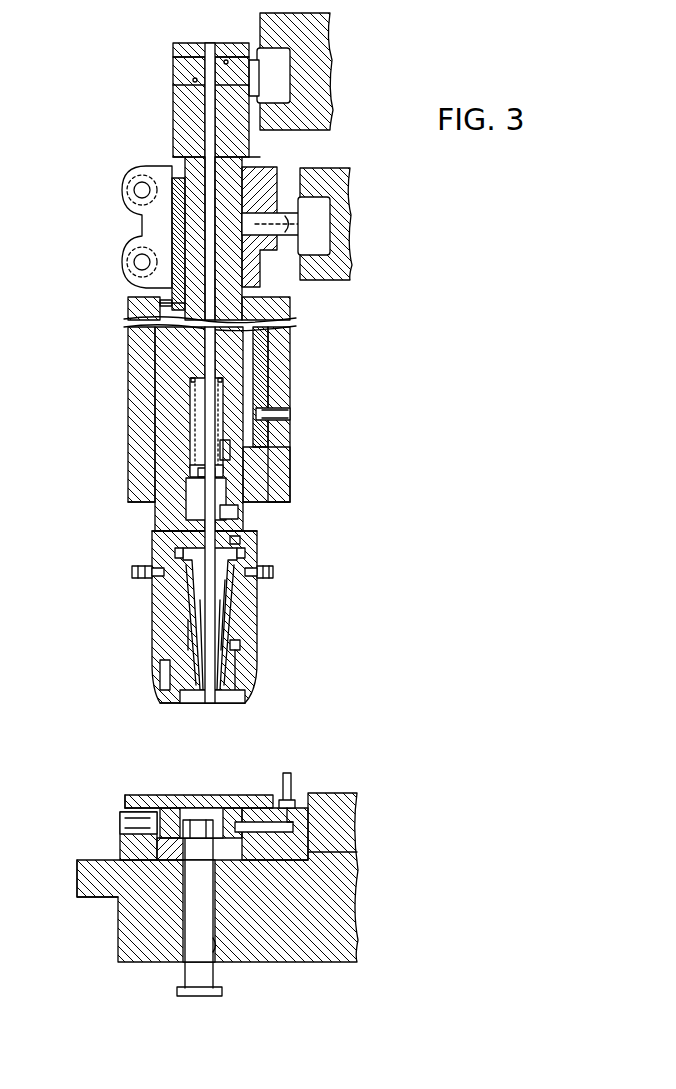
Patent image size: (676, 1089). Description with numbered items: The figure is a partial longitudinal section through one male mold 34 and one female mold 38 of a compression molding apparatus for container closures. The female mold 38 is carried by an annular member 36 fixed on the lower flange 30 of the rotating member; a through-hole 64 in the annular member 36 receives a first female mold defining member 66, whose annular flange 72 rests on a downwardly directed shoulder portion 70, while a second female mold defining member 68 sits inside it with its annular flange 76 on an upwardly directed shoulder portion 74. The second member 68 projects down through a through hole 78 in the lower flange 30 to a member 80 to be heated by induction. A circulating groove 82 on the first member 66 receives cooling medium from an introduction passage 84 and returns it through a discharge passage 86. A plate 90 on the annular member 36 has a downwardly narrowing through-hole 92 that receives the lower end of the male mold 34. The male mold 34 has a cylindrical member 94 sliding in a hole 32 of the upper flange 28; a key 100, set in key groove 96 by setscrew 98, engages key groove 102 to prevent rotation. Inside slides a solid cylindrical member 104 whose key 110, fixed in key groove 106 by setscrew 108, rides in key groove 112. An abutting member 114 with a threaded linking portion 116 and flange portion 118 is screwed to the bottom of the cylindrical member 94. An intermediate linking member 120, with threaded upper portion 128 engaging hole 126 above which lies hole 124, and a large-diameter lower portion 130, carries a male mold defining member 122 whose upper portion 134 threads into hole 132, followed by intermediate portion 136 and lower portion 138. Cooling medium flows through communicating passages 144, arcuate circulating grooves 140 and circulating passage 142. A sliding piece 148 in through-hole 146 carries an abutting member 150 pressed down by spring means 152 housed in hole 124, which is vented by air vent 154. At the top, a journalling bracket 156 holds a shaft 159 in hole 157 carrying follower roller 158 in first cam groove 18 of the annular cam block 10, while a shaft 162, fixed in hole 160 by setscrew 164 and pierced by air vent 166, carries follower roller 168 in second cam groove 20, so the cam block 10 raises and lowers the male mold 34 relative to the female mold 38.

The annular cam block 10 is at (325, 165).
The first cam groove 18 is at (335, 198).
The second cam groove 20 is at (285, 50).
The upper flange 28 is at (135, 420).
The lower flange 30 is at (122, 952).
The hole 32 is at (158, 355).
The male mold 34 is at (125, 535).
The annular member 36 is at (118, 848).
The female mold 38 is at (157, 780).
The through-hole 64 is at (165, 868).
The first female mold defining member 66 is at (240, 806).
The second female mold defining member 68 is at (207, 832).
The shoulder portion 70 is at (240, 855).
The annular flange 72 is at (160, 867).
The shoulder portion 74 is at (199, 913).
The annular flange 76 is at (190, 830).
The through hole 78 is at (215, 945).
The member to be heated 80 is at (205, 993).
The circulating groove 82 is at (135, 800).
The introduction passage 84 is at (262, 852).
The discharge passage 86 is at (130, 812).
The plate 90 is at (274, 790).
The through-hole 92 is at (170, 797).
The cylindrical member 94 is at (148, 502).
The key groove 96 is at (272, 382).
The setscrew 98 is at (288, 410).
The key 100 is at (262, 357).
The key groove 102 is at (258, 470).
The solid cylindrical member 104 is at (280, 318).
The key groove 106 is at (172, 212).
The setscrew 108 is at (168, 302).
The key 110 is at (175, 237).
The key groove 112 is at (172, 165).
The abutting member 114 is at (160, 703).
The linking portion 116 is at (160, 665).
The flange portion 118 is at (160, 690).
The intermediate linking member 120 is at (238, 513).
The male mold defining member 122 is at (243, 660).
The hole 124 is at (228, 455).
The hole 126 is at (153, 522).
The upper portion 128 is at (226, 493).
The large-diameter lower portion 130 is at (225, 625).
The hole 132 is at (193, 605).
The upper portion 134 is at (228, 605).
The large-diameter intermediate portion 136 is at (240, 648).
The lower portion 138 is at (240, 700).
The arcuate circulating grooves 140 is at (175, 555).
The circulating passage 142 is at (160, 578).
The communicating passages 144 is at (145, 572).
The through-hole 146 is at (192, 640).
The sliding piece 148 is at (240, 540).
The abutting member 150 is at (190, 472).
The spring means 152 is at (190, 380).
The air vent 154 is at (138, 287).
The journalling bracket 156 is at (123, 172).
The hole 157 is at (270, 207).
The follower roller 158 is at (322, 240).
The shaft 159 is at (280, 238).
The hole 160 is at (233, 57).
The shaft 162 is at (175, 70).
The setscrew 164 is at (187, 47).
The air vent 166 is at (182, 85).
The follower roller 168 is at (283, 78).